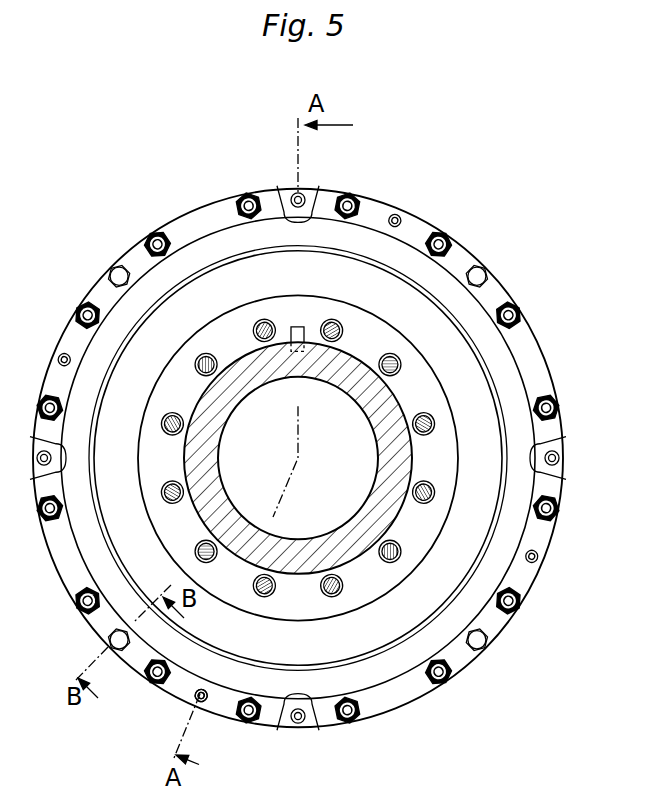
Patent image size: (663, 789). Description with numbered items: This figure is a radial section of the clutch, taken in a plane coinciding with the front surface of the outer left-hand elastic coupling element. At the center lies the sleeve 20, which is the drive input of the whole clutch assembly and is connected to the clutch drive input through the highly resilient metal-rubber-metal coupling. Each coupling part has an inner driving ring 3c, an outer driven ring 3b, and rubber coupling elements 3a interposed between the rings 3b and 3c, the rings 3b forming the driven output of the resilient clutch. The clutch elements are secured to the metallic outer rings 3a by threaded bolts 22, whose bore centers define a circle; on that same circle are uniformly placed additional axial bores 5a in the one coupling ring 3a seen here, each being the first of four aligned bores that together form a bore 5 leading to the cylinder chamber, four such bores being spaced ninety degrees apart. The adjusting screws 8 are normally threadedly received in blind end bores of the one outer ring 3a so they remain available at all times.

The outer ring 3a is at (413, 693).
The outer driven ring 3b is at (433, 605).
The inner driving ring 3c is at (358, 588).
The bore 5 is at (192, 698).
The bore 5a is at (154, 723).
The adjusting screw 8 is at (107, 640).
The sleeve 20 is at (303, 545).
The threaded bolt 22 is at (357, 199).